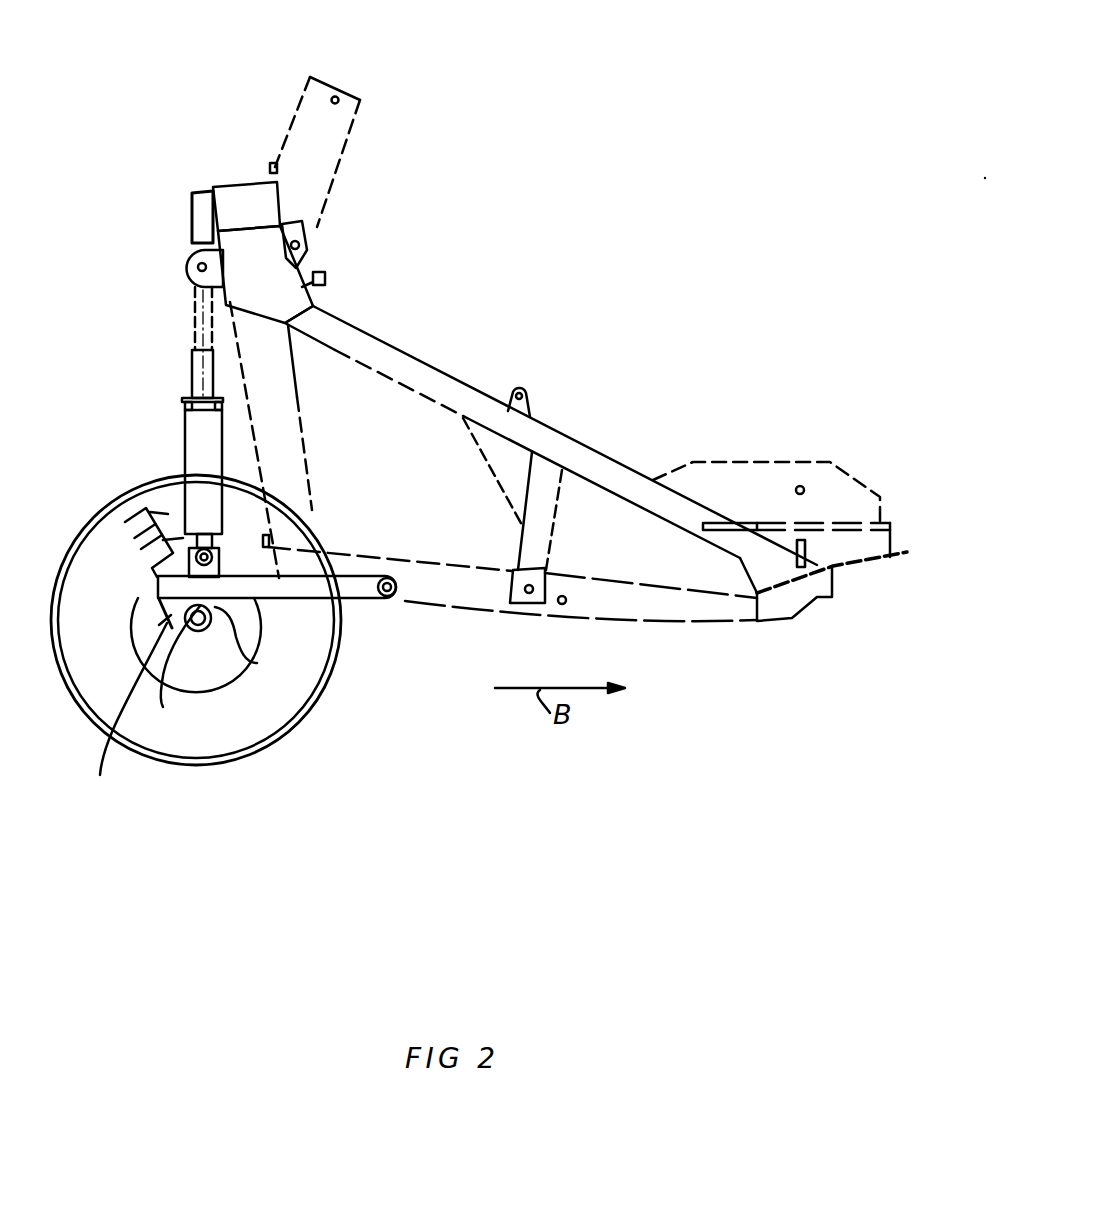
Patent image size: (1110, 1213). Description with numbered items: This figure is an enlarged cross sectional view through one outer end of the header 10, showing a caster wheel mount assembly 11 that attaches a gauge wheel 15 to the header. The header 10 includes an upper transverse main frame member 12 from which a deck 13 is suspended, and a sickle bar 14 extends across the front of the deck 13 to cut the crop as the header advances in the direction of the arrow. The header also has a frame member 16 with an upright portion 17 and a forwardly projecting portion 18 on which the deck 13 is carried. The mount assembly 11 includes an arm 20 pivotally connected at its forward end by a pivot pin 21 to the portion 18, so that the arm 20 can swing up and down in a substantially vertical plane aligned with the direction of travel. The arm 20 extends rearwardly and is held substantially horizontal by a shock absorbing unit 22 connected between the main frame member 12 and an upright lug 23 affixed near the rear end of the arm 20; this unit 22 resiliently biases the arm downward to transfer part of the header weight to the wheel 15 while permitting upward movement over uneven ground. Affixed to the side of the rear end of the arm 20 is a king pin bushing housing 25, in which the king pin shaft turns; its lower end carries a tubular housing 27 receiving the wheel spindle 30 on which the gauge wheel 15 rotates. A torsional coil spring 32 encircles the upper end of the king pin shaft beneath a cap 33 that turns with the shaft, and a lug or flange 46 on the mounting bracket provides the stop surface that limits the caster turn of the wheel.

The header 10 is at (572, 385).
The caster wheel mount assembly 11 is at (163, 488).
The upper transverse main frame member 12 is at (244, 184).
The deck 13 is at (600, 557).
The sickle bar 14 is at (838, 594).
The gauge wheel 15 is at (299, 722).
The frame member 16 is at (420, 545).
The upright portion 17 is at (305, 497).
The forwardly projecting portion 18 is at (625, 607).
The arm 20 is at (332, 605).
The pivot pin 21 is at (387, 597).
The shock absorbing unit 22 is at (182, 399).
The upright lug 23 is at (222, 567).
The king pin bushing housing 25 is at (157, 577).
The tubular housing 27 is at (257, 663).
The wheel spindle 30 is at (163, 707).
The torsional coil spring 32 is at (140, 571).
The cap 33 is at (133, 503).
The lug or flange 46 is at (100, 775).